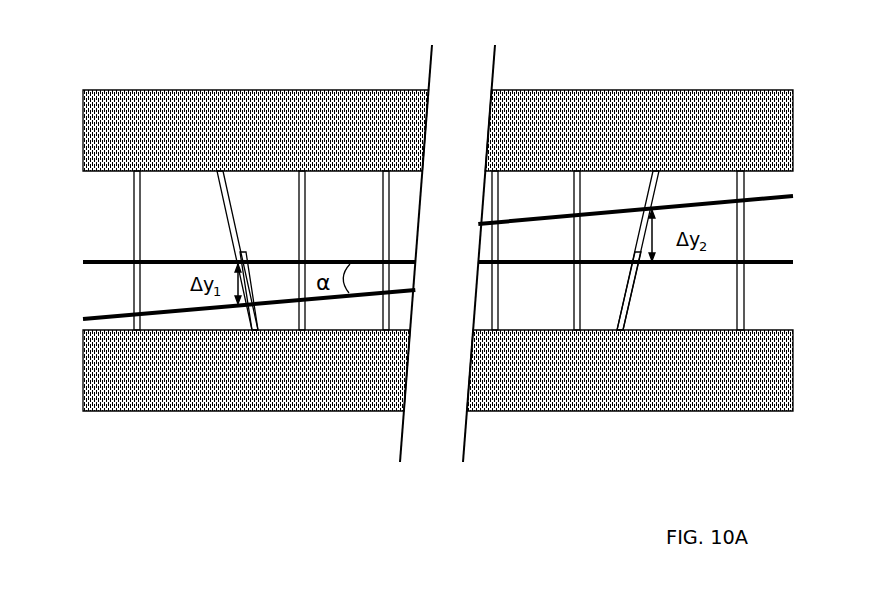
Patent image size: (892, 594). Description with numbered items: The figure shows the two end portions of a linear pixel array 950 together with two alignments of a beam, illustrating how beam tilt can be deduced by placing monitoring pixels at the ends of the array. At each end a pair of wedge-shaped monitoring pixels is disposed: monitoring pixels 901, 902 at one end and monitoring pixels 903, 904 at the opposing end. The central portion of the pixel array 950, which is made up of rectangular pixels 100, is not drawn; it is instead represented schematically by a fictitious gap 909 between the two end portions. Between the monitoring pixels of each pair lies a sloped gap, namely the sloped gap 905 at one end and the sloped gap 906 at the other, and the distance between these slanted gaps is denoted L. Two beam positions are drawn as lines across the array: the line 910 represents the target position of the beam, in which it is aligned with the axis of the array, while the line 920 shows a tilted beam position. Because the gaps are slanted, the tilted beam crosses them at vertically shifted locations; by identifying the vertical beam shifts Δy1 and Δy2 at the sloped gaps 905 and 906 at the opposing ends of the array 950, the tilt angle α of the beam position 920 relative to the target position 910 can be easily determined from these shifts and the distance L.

The linear pixel array 950 is at (284, 90).
The rectangular pixels 100 is at (338, 330).
The wedge-shaped monitoring pixel 901 is at (158, 171).
The wedge-shaped monitoring pixel 902 is at (245, 171).
The wedge-shaped monitoring pixel 903 is at (612, 171).
The wedge-shaped monitoring pixel 904 is at (698, 171).
The sloped gap 905 is at (258, 330).
The sloped gap 906 is at (623, 330).
The fictitious gap 909 is at (436, 428).
The target beam position 910 is at (82, 260).
The tilted beam position 920 is at (82, 318).